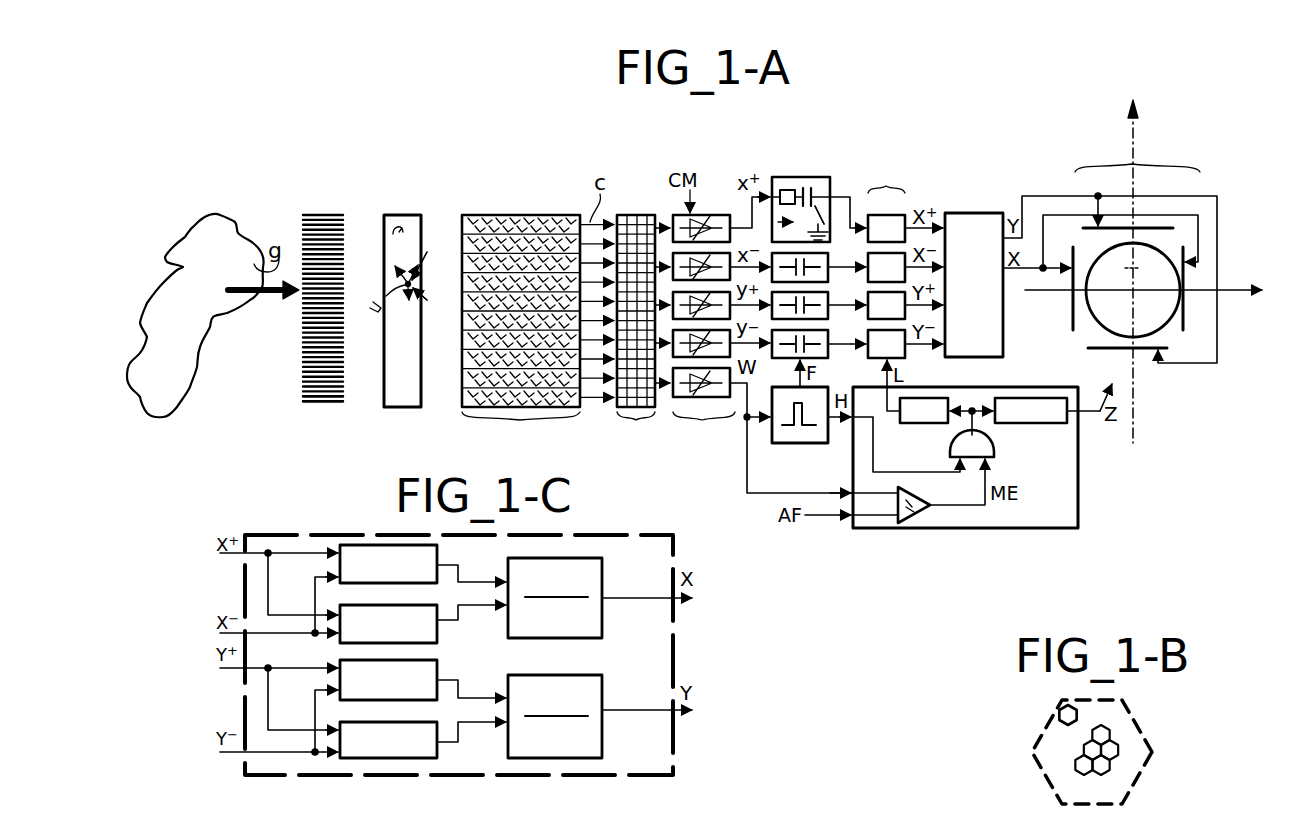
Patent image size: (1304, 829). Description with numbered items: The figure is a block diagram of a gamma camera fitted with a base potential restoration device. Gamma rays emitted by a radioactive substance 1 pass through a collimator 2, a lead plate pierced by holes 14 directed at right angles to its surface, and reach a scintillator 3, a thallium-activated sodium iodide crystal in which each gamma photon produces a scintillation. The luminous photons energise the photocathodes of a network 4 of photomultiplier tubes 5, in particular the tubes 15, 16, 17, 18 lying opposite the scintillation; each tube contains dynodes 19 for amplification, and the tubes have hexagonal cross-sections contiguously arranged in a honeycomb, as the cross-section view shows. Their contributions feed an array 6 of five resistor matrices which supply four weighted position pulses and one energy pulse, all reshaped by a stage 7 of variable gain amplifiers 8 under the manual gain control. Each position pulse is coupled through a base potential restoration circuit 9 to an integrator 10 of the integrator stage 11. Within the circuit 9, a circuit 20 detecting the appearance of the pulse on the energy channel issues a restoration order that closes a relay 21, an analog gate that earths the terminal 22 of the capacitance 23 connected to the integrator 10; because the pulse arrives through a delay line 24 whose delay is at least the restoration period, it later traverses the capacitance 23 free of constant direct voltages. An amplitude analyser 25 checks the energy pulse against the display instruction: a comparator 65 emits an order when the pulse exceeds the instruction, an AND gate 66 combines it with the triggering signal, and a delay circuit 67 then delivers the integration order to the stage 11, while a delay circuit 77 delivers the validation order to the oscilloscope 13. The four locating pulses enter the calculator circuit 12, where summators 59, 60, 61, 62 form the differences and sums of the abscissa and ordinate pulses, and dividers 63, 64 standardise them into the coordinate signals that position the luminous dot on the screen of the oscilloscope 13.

In FIG. 1-A, the radioactive substance 1 is at (170, 406).
In FIG. 1-A, the collimator 2 is at (314, 405).
In FIG. 1-A, the scintillator 3 is at (405, 407).
In FIG. 1-A, the network of photomultiplier tubes 4 is at (521, 334).
In FIG. 1-A, the photomultiplier tube 5 is at (526, 214).
In FIG. 1-A, the array of matrices of resistors 6 is at (636, 334).
In FIG. 1-A, the stage of variable gain amplifiers 7 is at (704, 334).
In FIG. 1-A, the variable gain amplifier 8 is at (713, 215).
In FIG. 1-A, the base potential restoration circuit 9 is at (830, 186).
In FIG. 1-A, the integrator 10 is at (900, 213).
In FIG. 1-A, the integrator stage 11 is at (886, 259).
In FIG. 1-A, the calculator circuit 12 is at (974, 213).
In FIG. 1-C, the calculator circuit 12 is at (664, 636).
In FIG. 1-A, the oscilloscope 13 is at (1132, 271).
In FIG. 1-A, the holes 14 is at (343, 402).
In FIG. 1-A, the photomultiplier tube 15 is at (462, 240).
In FIG. 1-A, the photomultiplier tube 16 is at (462, 260).
In FIG. 1-A, the photomultiplier tube 17 is at (462, 284).
In FIG. 1-A, the photomultiplier tube 18 is at (462, 316).
In FIG. 1-A, the dynodes 19 is at (483, 214).
In FIG. 1-A, the circuit for location of the appearance of the pulse 20 is at (812, 443).
In FIG. 1-A, the relay 21 is at (823, 224).
In FIG. 1-A, the terminal 22 is at (812, 186).
In FIG. 1-A, the capacitance 23 is at (803, 186).
In FIG. 1-A, the delay line 24 is at (778, 182).
In FIG. 1-A, the amplitude analyser 25 is at (1072, 519).
In FIG. 1-C, the summator 59 is at (440, 555).
In FIG. 1-C, the summator 60 is at (440, 636).
In FIG. 1-C, the summator 61 is at (440, 665).
In FIG. 1-C, the summator 62 is at (437, 733).
In FIG. 1-C, the divider 63 is at (602, 562).
In FIG. 1-C, the divider 64 is at (600, 676).
In FIG. 1-A, the comparator 65 is at (930, 508).
In FIG. 1-A, the AND gate 66 is at (994, 450).
In FIG. 1-A, the delay circuit 67 is at (914, 424).
In FIG. 1-A, the delay circuit 77 is at (1057, 424).